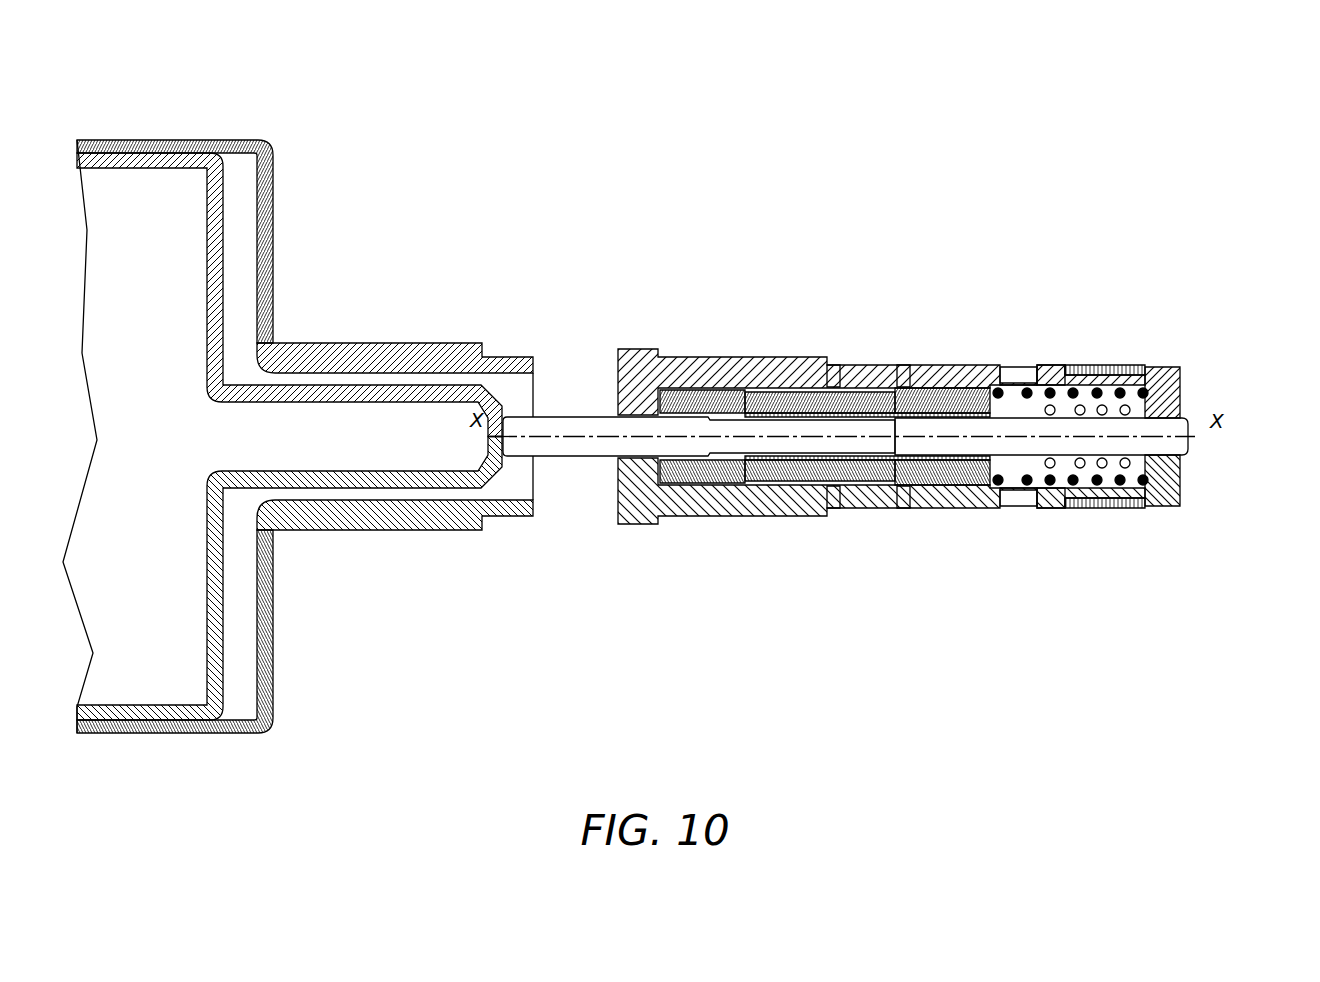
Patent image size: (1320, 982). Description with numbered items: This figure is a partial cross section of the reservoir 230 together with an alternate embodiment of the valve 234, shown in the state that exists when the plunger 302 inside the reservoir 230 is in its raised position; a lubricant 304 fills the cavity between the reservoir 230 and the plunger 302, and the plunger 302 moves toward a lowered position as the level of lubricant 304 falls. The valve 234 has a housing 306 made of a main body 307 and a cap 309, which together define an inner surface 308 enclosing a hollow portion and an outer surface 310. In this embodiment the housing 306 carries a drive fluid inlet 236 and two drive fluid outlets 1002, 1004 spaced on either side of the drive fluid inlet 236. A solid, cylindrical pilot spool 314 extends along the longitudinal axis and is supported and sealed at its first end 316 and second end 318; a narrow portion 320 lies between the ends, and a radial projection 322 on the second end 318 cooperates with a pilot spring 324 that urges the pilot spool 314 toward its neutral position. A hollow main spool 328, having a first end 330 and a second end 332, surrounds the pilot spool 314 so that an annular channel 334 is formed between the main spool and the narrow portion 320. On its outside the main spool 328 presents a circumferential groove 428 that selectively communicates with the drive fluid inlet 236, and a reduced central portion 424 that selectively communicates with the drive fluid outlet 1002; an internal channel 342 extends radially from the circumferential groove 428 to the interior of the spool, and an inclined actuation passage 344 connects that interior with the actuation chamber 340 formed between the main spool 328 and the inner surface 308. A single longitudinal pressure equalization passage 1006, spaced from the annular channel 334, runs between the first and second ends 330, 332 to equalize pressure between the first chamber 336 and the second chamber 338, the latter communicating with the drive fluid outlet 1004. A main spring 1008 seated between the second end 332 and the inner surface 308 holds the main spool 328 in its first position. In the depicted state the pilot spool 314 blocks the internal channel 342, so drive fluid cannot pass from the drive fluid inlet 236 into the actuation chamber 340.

The reservoir 230 is at (231, 140).
The valve 234 is at (745, 246).
The drive fluid inlet 236 is at (940, 360).
The plunger 302 is at (250, 449).
The lubricant 304 is at (237, 273).
The housing 306 is at (1077, 518).
The main body 307 is at (1047, 515).
The inner surface 308 is at (852, 395).
The cap 309 is at (1183, 498).
The outer surface 310 is at (1040, 356).
The pilot spool 314 is at (568, 450).
The first end 316 is at (553, 392).
The second end 318 is at (1200, 458).
The narrow portion 320 is at (770, 488).
The radial projection 322 is at (1095, 372).
The pilot spring 324 is at (1175, 389).
The main spool 328 is at (790, 388).
The first end 330 is at (695, 383).
The second end 332 is at (1018, 375).
The annular channel 334 is at (882, 385).
The first chamber 336 is at (692, 512).
The second chamber 338 is at (1108, 490).
The actuation chamber 340 is at (748, 380).
The internal channel 342 is at (960, 365).
The actuation passage 344 is at (775, 383).
The central portion 424 is at (815, 490).
The circumferential groove 428 is at (932, 505).
The drive fluid outlet 1002 is at (843, 380).
The drive fluid outlet 1004 is at (1035, 355).
The pressure equalization passage 1006 is at (852, 490).
The main spring 1008 is at (1120, 376).